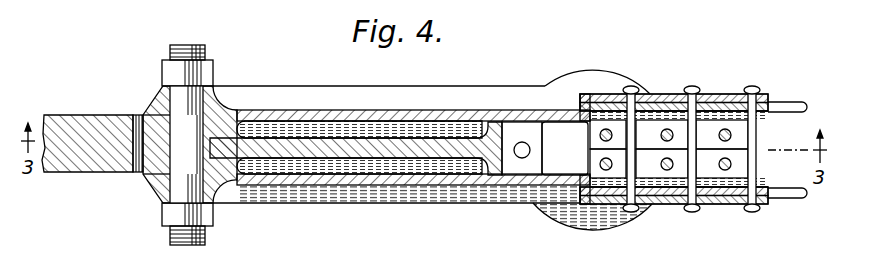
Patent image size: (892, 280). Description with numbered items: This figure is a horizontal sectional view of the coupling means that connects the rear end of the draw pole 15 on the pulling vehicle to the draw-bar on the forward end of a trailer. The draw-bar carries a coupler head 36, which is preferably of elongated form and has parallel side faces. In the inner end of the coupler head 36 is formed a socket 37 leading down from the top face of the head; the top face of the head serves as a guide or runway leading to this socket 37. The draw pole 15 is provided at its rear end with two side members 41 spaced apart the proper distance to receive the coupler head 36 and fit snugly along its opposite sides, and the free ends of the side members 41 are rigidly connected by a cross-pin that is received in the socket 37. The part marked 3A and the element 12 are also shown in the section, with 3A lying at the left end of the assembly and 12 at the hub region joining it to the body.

The bar 3A is at (46, 114).
The hub 12 is at (177, 137).
The socket 37 is at (147, 155).
The side members 41 is at (277, 111).
The coupler head 36 is at (393, 148).
The draw pole 15 is at (778, 101).